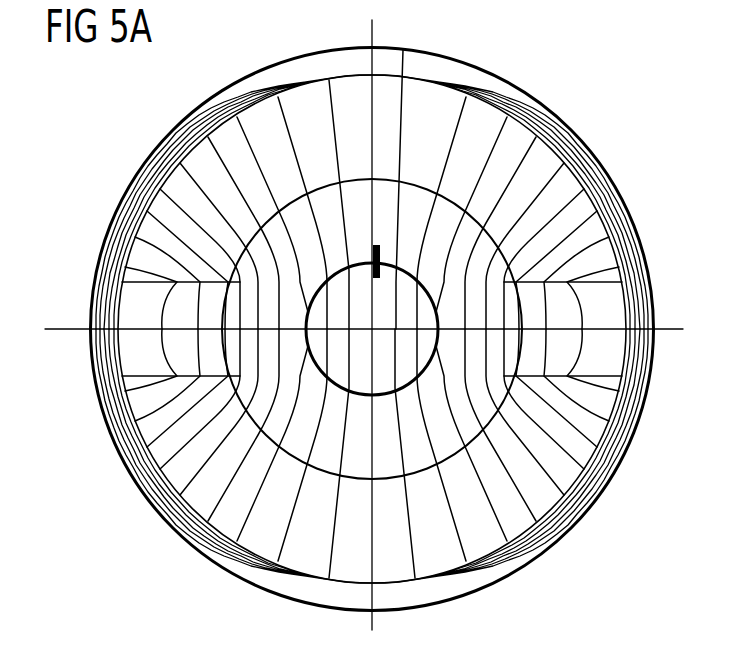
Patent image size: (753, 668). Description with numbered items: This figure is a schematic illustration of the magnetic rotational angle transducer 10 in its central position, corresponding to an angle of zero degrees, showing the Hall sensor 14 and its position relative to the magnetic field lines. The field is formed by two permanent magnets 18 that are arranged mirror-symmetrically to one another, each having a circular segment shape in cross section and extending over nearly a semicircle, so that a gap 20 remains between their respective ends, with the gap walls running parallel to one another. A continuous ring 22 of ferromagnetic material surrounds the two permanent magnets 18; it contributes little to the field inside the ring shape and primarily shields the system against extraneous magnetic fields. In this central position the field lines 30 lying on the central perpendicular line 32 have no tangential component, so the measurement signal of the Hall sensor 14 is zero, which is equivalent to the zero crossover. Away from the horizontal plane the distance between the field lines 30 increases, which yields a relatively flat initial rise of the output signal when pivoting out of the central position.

The magnetic rotational angle transducer 10 is at (583, 124).
The Hall sensor 14 is at (380, 246).
The permanent magnets 18 is at (483, 113).
The gap 20 is at (622, 352).
The ring 22 is at (637, 220).
The field lines 30 is at (331, 108).
The central perpendicular line 32 is at (373, 44).